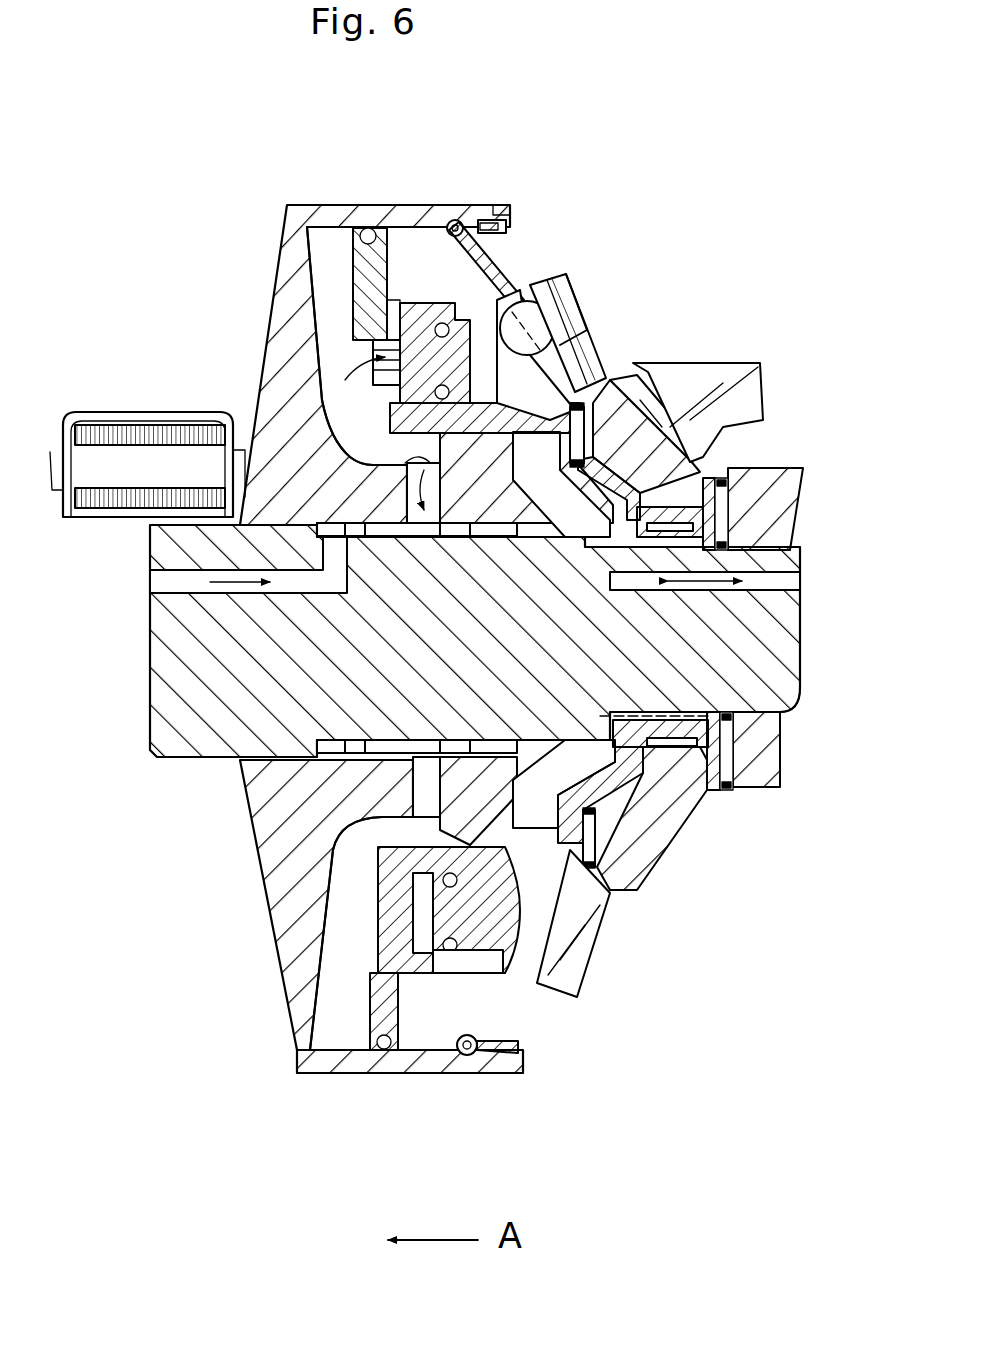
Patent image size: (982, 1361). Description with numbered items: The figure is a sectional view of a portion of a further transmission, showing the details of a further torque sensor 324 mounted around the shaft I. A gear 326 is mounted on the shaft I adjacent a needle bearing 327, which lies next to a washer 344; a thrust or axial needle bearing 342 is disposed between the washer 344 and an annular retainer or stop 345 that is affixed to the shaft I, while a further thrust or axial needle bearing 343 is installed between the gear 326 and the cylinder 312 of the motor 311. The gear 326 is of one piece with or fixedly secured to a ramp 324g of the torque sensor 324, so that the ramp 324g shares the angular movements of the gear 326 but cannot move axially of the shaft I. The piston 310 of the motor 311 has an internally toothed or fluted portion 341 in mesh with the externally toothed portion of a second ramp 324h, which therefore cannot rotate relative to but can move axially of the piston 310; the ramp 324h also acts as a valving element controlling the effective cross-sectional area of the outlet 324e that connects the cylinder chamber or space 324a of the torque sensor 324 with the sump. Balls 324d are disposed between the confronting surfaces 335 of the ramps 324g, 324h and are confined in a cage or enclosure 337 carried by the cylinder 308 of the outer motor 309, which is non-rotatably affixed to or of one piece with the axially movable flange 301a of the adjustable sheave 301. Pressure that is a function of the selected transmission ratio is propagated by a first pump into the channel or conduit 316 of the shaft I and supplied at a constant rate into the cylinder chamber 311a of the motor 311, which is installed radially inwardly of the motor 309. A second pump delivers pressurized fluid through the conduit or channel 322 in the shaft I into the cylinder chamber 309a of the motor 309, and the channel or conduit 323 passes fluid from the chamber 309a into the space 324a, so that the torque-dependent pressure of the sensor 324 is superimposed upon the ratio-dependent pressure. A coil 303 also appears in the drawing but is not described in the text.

The shaft I is at (790, 652).
The adjustable sheave 301 is at (210, 825).
The axially movable flange 301a is at (293, 272).
The coil 303 is at (137, 413).
The cylinder 308 is at (460, 1067).
The outer motor 309 is at (343, 985).
The cylinder chamber 309a is at (322, 253).
The piston 310 is at (385, 1052).
The motor 311 is at (600, 395).
The cylinder chamber 311a is at (610, 880).
The cylinder 312 is at (630, 392).
The channel or conduit 316 is at (787, 580).
The conduit or channel 322 is at (160, 582).
The channel or conduit 323 is at (358, 228).
The torque sensor 324 is at (507, 274).
The cylinder chamber or space 324a is at (410, 300).
The balls 324d is at (540, 312).
The outlet 324e is at (427, 290).
The ramp 324g is at (567, 307).
The second ramp 324h is at (508, 285).
The gear 326 is at (712, 422).
The needle bearing 327 is at (737, 465).
The confronting surfaces 335 is at (507, 392).
The cage or enclosure 337 is at (486, 236).
The internally toothed or fluted portion 341 is at (513, 980).
The thrust or axial needle bearing 342 is at (743, 790).
The thrust or axial needle bearing 343 is at (597, 835).
The washer 344 is at (717, 787).
The annular retainer or stop 345 is at (765, 747).